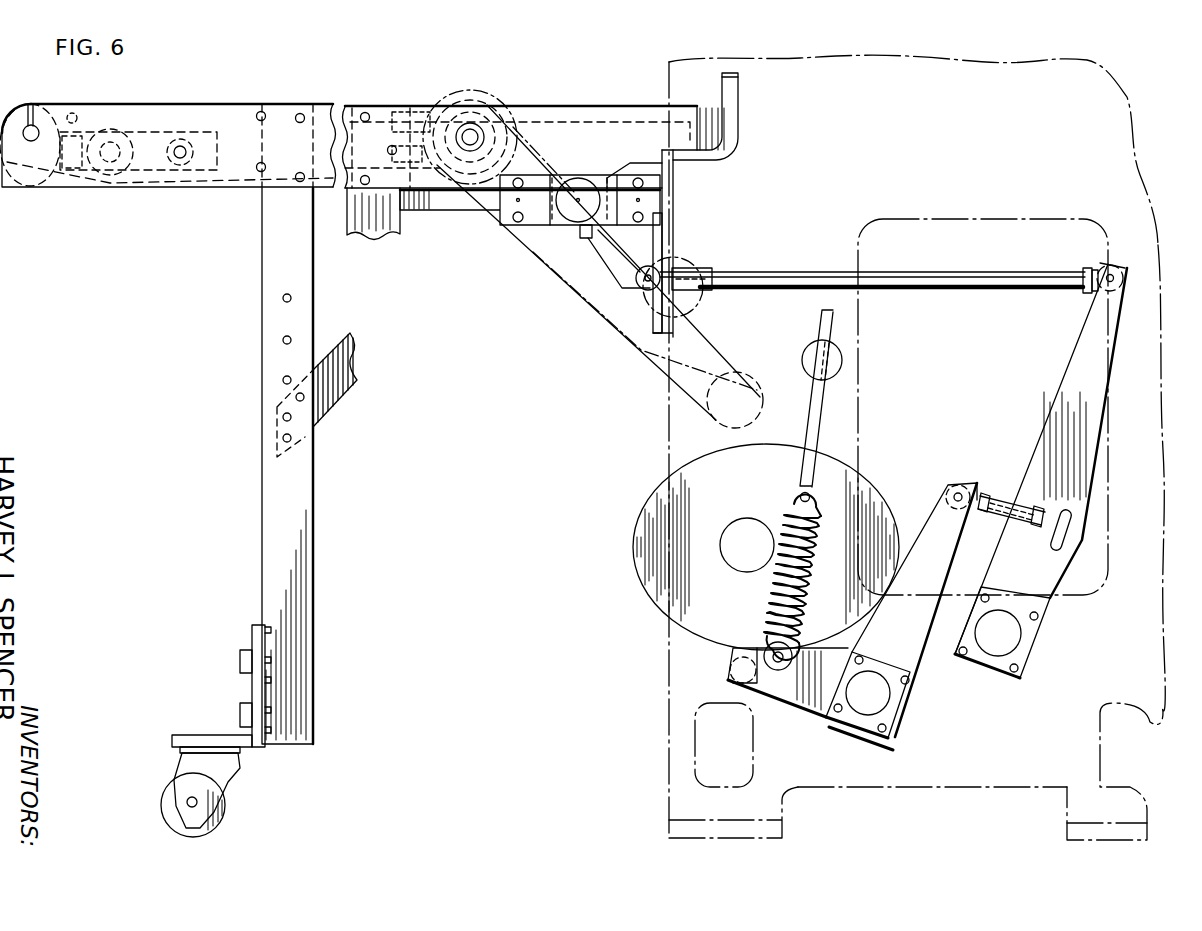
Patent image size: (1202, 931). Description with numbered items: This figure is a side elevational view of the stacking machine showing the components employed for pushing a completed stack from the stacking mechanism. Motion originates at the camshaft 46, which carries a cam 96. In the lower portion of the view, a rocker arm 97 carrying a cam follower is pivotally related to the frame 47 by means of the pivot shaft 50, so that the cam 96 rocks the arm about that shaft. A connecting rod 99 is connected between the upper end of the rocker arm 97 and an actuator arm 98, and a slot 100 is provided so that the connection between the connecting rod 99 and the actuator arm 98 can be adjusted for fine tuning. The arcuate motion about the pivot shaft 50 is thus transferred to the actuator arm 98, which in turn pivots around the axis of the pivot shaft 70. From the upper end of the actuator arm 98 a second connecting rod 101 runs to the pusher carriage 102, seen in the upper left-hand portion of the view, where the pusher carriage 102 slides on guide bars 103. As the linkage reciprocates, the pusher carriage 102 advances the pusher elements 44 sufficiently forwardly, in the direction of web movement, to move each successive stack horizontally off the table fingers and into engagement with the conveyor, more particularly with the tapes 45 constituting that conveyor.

The pusher elements 44 is at (738, 84).
The tapes 45 is at (50, 168).
The camshaft 46 is at (757, 556).
The frame 47 is at (962, 169).
The pivot shaft 50 is at (883, 702).
The pivot shaft 70 is at (1010, 635).
The cam 96 is at (638, 577).
The rocker arm 97 is at (915, 647).
The actuator arm 98 is at (1088, 413).
The connecting rod 99 is at (1000, 507).
The slot 100 is at (1070, 547).
The connecting rod 101 is at (819, 270).
The pusher carriage 102 is at (616, 262).
The guide bars 103 is at (446, 208).